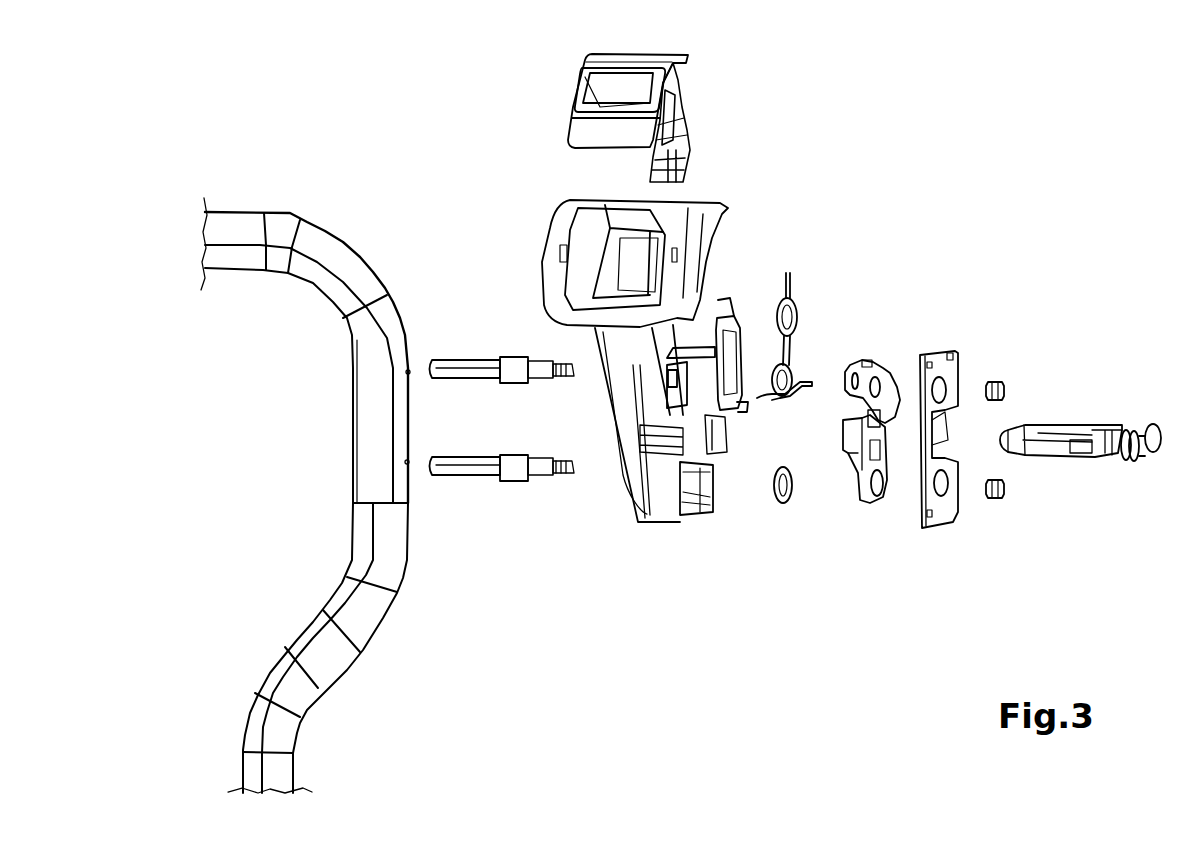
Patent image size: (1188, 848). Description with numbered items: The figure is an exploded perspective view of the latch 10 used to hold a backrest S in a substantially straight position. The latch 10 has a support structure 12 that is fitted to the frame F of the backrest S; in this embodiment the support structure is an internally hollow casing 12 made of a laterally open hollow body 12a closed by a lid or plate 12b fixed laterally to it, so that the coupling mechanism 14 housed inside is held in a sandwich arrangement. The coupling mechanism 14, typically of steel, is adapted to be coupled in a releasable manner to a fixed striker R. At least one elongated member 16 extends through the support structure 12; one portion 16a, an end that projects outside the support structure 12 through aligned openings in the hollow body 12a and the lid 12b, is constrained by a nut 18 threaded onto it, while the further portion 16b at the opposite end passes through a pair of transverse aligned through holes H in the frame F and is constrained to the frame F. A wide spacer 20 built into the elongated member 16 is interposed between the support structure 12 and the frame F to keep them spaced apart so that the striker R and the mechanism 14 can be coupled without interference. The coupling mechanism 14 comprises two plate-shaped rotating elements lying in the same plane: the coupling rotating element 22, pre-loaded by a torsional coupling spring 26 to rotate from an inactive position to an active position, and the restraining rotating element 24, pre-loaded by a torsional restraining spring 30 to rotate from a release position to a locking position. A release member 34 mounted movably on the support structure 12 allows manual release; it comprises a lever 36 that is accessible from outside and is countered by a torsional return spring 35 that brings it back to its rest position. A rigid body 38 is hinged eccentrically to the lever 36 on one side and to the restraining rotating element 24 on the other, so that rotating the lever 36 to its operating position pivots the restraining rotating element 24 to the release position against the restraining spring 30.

The latch 10 is at (922, 150).
The support structure 12 is at (766, 434).
The hollow body 12a is at (658, 510).
The lid or plate 12b is at (942, 512).
The coupling mechanism 14 is at (865, 408).
The elongated member 16 is at (521, 423).
The portion of the elongated member 16a is at (543, 478).
The further portion of the elongated member 16b is at (455, 472).
The nut 18 is at (998, 378).
The spacer 20 is at (517, 367).
The coupling rotating element 22 is at (893, 442).
The restraining rotating element 24 is at (851, 375).
The coupling spring 26 is at (783, 506).
The restraining spring 30 is at (806, 390).
The release member 34 is at (683, 107).
The return spring 35 is at (793, 296).
The lever 36 is at (587, 130).
The rigid body 38 is at (732, 318).
The backrest S is at (230, 214).
The frame F is at (246, 236).
The through holes H is at (410, 372).
The striker R is at (1096, 430).